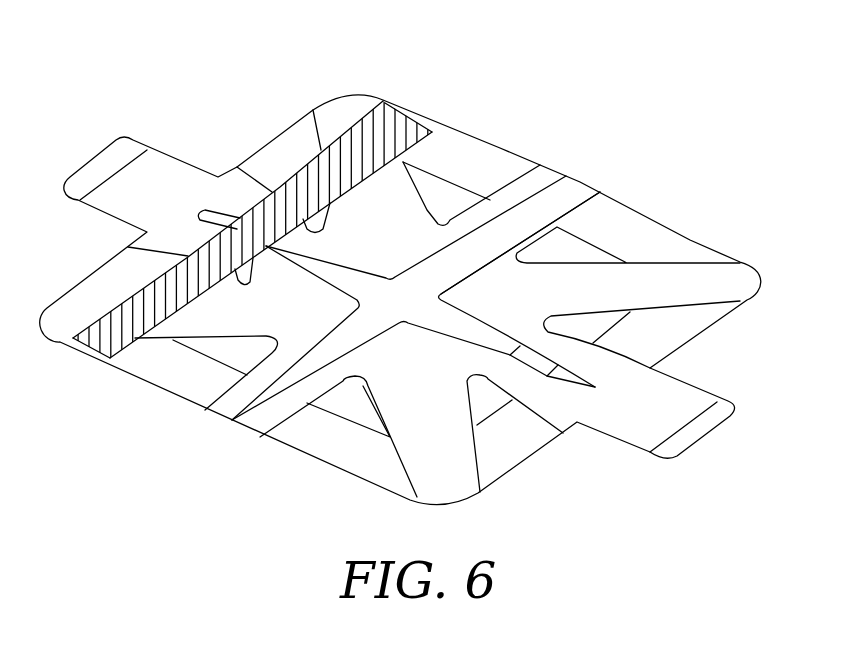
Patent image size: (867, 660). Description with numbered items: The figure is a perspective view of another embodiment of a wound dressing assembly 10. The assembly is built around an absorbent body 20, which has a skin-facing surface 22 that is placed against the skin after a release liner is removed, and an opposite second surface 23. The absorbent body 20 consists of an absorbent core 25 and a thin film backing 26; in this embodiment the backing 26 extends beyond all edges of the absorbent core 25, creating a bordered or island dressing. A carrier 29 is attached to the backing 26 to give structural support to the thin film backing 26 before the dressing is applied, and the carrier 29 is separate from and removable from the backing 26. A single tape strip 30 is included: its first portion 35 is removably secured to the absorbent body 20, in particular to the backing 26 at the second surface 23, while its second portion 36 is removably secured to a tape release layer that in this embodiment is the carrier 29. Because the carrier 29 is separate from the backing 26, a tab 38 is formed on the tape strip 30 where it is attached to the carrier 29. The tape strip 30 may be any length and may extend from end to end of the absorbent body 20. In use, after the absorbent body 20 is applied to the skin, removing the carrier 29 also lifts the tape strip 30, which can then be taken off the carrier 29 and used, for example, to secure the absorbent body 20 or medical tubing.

The wound dressing assembly 10 is at (115, 50).
The absorbent body 20 is at (516, 128).
The skin-facing surface 22 is at (196, 427).
The second surface 23 is at (290, 90).
The absorbent core 25 is at (443, 267).
The backing 26 is at (153, 368).
The carrier 29 is at (393, 180).
The tape strip 30 is at (403, 160).
The first portion 35 is at (160, 290).
The second portion 36 is at (117, 323).
The tab 38 is at (303, 325).